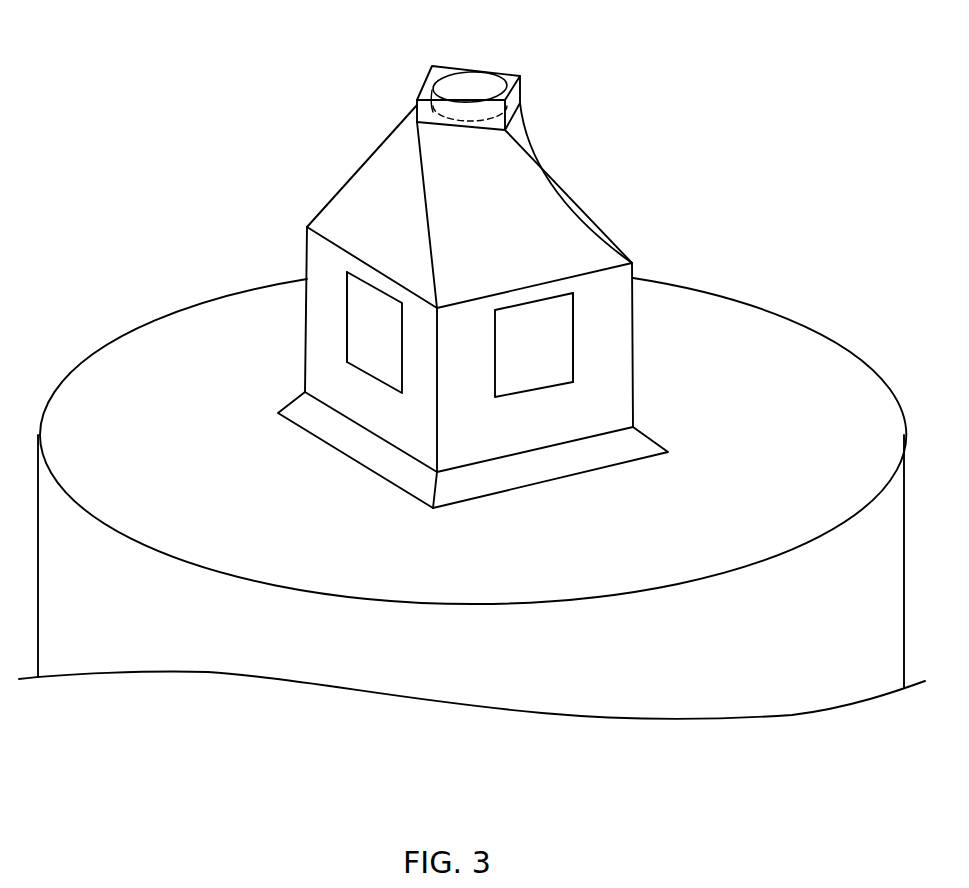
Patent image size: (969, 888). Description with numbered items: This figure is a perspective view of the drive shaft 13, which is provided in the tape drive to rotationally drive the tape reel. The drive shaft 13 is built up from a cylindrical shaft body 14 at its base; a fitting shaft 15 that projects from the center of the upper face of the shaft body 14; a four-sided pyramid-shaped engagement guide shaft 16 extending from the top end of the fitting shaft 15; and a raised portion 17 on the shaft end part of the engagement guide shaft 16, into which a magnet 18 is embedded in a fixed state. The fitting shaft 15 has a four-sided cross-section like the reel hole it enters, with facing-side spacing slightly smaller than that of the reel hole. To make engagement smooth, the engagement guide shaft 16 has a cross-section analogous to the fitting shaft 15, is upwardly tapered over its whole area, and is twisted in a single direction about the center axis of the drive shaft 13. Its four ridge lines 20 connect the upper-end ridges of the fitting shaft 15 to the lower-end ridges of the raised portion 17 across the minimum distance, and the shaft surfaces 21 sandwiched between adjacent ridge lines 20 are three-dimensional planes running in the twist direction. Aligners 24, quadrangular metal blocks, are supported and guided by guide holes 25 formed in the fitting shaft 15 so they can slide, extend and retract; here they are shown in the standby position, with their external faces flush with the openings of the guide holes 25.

The drive shaft 13 is at (487, 391).
The cylindrical shaft body 14 is at (429, 664).
The fitting shaft 15 is at (487, 500).
The engagement guide shaft 16 is at (469, 201).
The raised portion 17 is at (483, 69).
The magnet 18 is at (472, 78).
The ridge lines 20 is at (417, 162).
The shaft surfaces 21 is at (352, 195).
The aligners 24 is at (362, 315).
The guide holes 25 is at (347, 342).